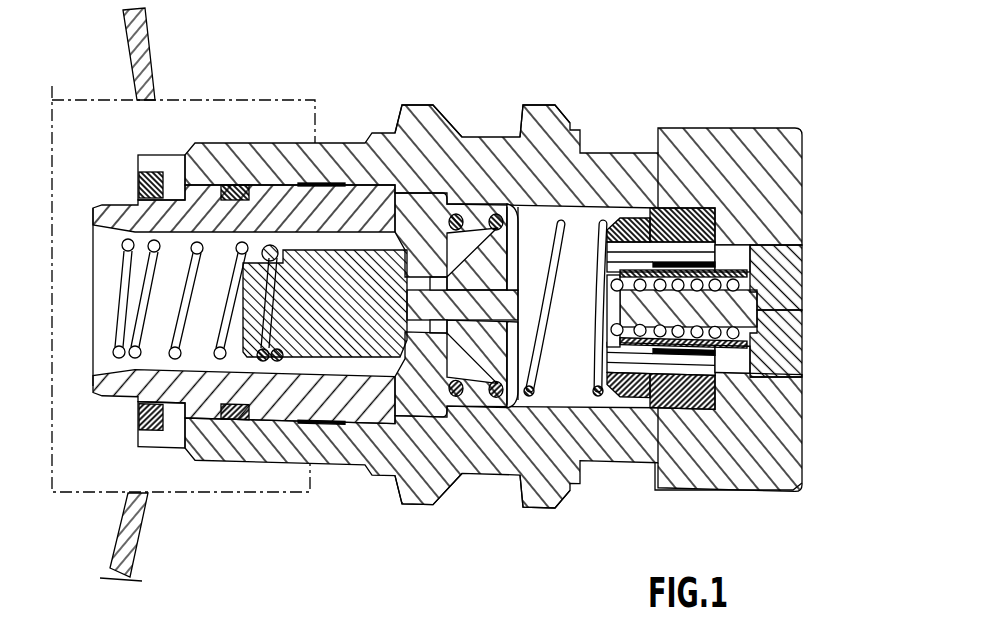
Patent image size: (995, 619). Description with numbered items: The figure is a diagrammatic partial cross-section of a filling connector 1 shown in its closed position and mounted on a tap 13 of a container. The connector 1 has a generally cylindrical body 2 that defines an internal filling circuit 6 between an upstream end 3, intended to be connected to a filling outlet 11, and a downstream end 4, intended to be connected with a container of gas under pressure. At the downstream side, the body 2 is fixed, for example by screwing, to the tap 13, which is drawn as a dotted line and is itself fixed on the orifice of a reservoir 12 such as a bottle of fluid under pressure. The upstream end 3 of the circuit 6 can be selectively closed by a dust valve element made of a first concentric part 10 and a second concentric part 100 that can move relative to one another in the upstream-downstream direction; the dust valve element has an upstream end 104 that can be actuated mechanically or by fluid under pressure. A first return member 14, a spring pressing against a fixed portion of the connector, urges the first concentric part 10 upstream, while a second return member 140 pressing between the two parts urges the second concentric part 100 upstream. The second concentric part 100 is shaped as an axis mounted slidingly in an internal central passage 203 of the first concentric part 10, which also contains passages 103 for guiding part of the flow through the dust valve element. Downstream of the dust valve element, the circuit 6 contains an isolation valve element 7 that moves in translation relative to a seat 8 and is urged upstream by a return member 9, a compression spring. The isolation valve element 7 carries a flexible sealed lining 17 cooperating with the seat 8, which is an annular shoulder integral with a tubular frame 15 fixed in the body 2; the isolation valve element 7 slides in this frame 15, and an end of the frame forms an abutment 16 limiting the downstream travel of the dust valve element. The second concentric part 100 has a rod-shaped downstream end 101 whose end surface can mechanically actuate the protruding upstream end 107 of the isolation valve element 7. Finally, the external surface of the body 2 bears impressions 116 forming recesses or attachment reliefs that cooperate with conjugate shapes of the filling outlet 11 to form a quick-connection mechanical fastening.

The filling connector 1 is at (457, 309).
The body 2 is at (716, 466).
The upstream end 3 is at (806, 222).
The downstream end 4 is at (108, 339).
The internal filling circuit 6 is at (565, 350).
The isolation valve element 7 is at (307, 310).
The seat 8 is at (417, 340).
The return member 9 is at (176, 360).
The first concentric part 10 is at (787, 360).
The filling outlet 11 is at (147, 556).
The reservoir 12 is at (142, 57).
The tap 13 is at (101, 118).
The first return member 14 is at (605, 393).
The tubular frame 15 is at (417, 213).
The abutment 16 is at (500, 228).
The flexible sealed lining 17 is at (398, 328).
The second concentric part 100 is at (805, 258).
The downstream end 101 is at (607, 300).
The passages 103 is at (667, 257).
The upstream end 104 is at (808, 310).
The upstream end 107 is at (514, 304).
The impressions 116 is at (413, 103).
The second return member 140 is at (697, 287).
The internal central passage 203 is at (799, 465).